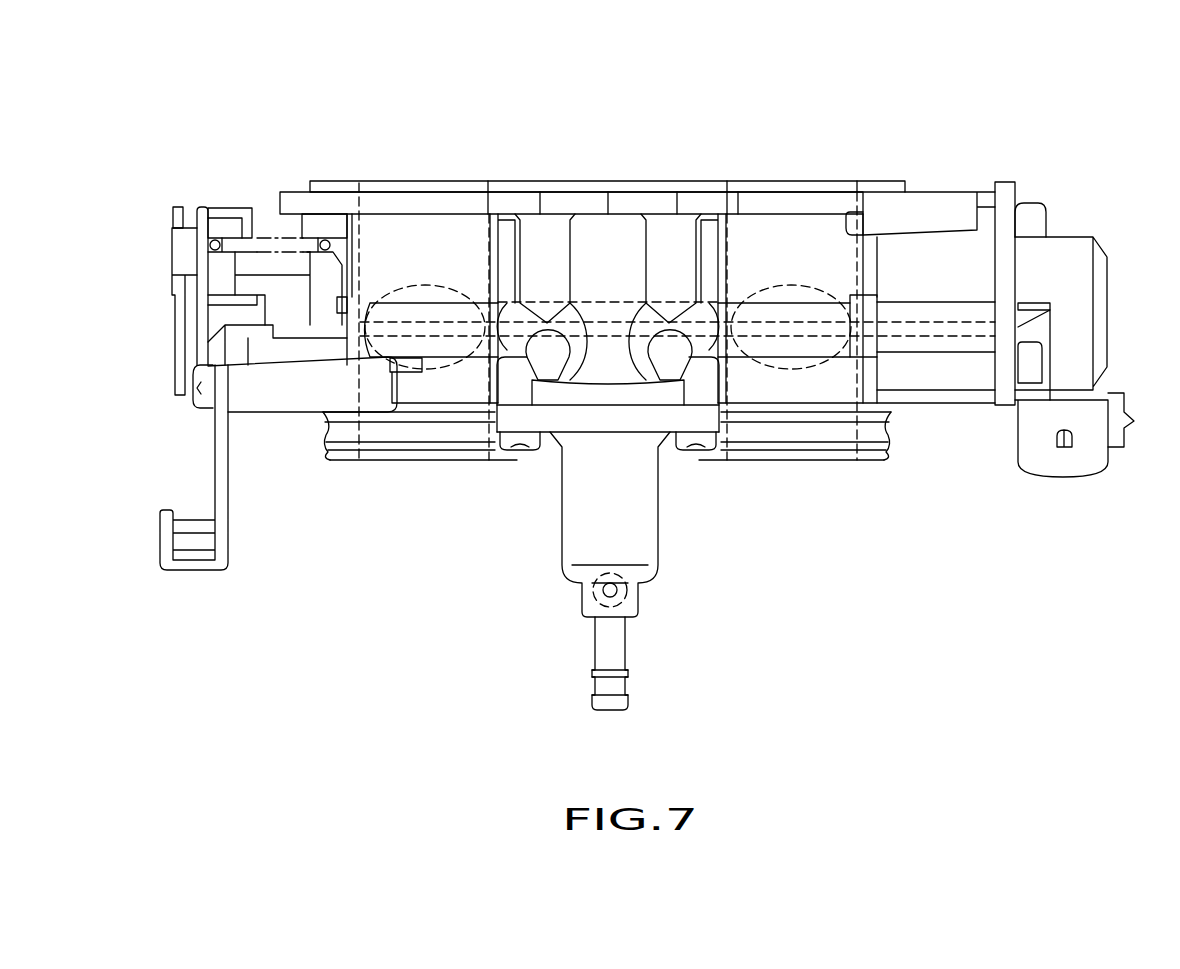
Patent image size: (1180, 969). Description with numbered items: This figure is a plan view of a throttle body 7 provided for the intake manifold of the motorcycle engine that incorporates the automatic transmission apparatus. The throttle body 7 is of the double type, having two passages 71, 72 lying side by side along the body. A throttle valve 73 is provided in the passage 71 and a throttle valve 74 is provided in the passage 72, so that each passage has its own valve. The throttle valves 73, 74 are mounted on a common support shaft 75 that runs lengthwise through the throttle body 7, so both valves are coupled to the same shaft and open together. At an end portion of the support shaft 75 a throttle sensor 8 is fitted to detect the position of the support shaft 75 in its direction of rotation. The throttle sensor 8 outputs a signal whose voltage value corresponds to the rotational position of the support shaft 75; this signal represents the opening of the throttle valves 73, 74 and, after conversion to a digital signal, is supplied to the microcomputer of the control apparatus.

The throttle body 7 is at (715, 150).
The passage 71 is at (397, 240).
The passage 72 is at (768, 237).
The throttle valve 73 is at (455, 287).
The throttle valve 74 is at (820, 287).
The support shaft 75 is at (947, 333).
The throttle sensor 8 is at (1077, 306).